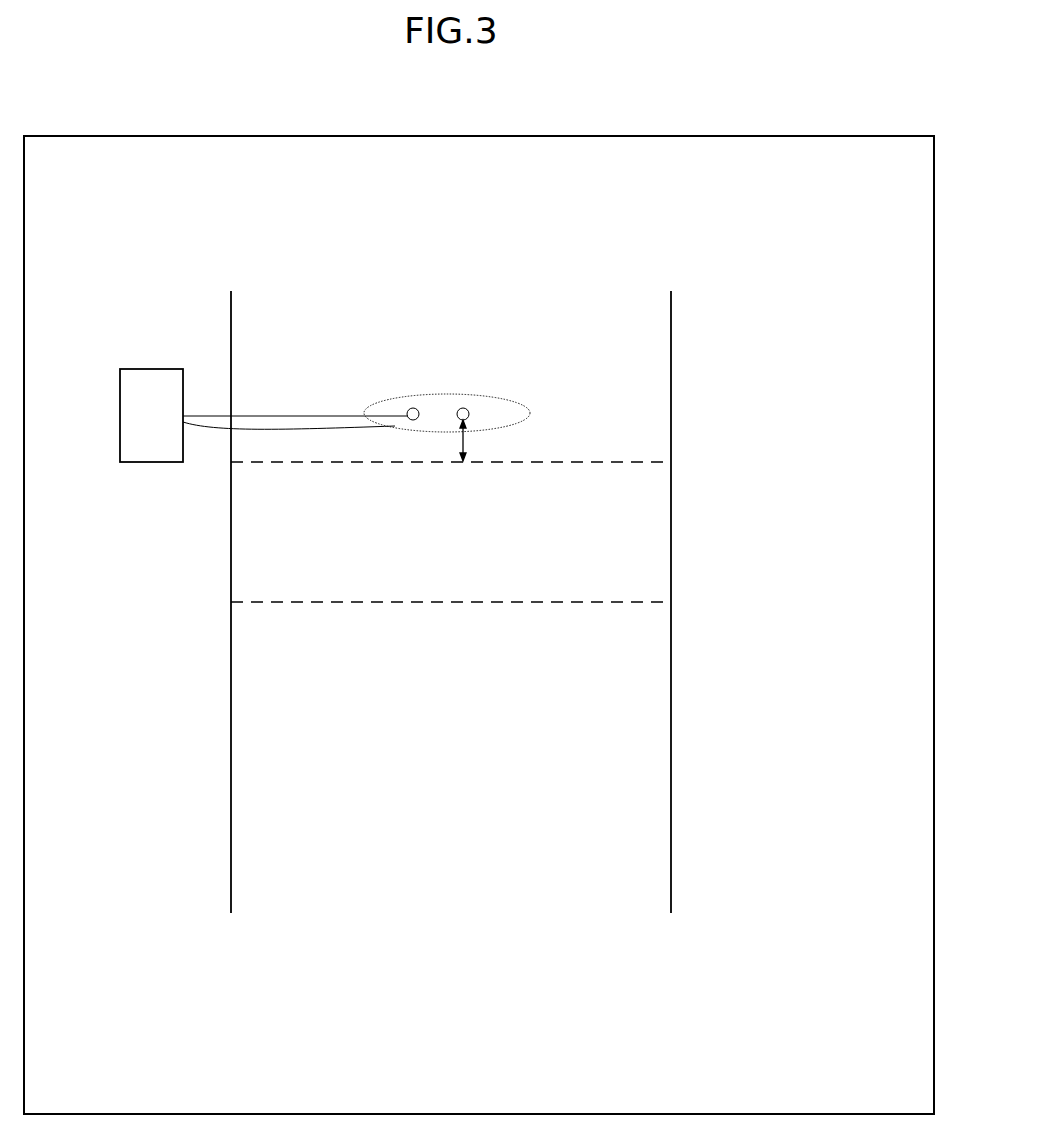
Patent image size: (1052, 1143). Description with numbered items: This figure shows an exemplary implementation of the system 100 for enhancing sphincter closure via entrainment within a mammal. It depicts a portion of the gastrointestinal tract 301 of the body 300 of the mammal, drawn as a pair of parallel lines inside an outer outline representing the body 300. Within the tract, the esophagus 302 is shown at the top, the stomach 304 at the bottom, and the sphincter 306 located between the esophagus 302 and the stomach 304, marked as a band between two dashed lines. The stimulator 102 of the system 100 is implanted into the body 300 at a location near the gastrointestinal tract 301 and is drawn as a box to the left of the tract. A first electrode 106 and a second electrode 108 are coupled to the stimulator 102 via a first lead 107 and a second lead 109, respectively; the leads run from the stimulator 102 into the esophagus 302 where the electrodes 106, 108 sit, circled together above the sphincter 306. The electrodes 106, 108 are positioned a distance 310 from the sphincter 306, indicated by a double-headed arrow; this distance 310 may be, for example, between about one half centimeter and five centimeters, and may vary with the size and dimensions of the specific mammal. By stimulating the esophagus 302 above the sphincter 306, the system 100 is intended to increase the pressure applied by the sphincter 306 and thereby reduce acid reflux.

The system 100 is at (175, 326).
The stimulator 102 is at (151, 415).
The first electrode 106 is at (413, 407).
The first lead 107 is at (260, 416).
The second electrode 108 is at (461, 407).
The second lead 109 is at (252, 431).
The body 300 is at (682, 136).
The gastrointestinal tract 301 is at (671, 666).
The esophagus 302 is at (443, 300).
The stomach 304 is at (461, 762).
The sphincter 306 is at (518, 375).
The distance 310 is at (463, 443).